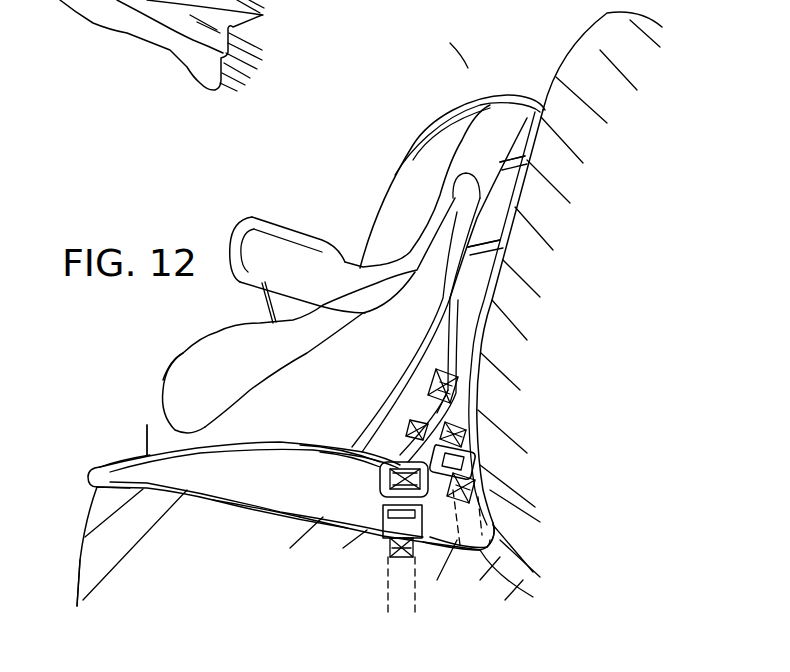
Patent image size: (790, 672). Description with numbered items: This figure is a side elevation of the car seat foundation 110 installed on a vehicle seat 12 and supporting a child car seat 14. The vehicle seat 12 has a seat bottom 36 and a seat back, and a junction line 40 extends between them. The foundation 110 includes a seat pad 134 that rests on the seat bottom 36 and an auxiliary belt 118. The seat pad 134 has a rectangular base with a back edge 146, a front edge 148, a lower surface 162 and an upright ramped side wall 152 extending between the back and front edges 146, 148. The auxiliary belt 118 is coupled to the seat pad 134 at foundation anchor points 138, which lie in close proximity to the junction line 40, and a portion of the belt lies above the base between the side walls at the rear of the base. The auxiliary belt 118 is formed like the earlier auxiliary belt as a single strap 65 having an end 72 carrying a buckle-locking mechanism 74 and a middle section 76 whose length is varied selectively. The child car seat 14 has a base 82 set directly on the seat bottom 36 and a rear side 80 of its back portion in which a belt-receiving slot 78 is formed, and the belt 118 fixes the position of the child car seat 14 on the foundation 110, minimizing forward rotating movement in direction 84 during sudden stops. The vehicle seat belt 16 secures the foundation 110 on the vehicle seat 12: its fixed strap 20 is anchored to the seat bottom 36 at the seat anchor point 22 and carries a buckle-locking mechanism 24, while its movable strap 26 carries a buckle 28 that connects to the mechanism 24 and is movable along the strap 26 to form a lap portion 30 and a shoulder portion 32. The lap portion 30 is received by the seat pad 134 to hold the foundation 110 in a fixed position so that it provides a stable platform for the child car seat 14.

The vehicle seat 12 is at (65, 0).
The child car seat 14 is at (389, 150).
The seat belt 16 is at (365, 493).
The fixed strap 20 is at (380, 587).
The seat anchor point 22 is at (432, 615).
The buckle-locking mechanism 24 is at (372, 538).
The movable strap 26 is at (418, 400).
The buckle 28 is at (361, 470).
The lap portion 30 is at (425, 404).
The shoulder portion 32 is at (463, 393).
The seat bottom 36 is at (110, 553).
The junction line 40 is at (517, 550).
The strap 65 is at (440, 370).
The end 72 is at (463, 423).
The buckle-locking mechanism 74 is at (468, 447).
The middle section 76 is at (515, 583).
The belt-receiving slot 78 is at (483, 307).
The rear side 80 is at (500, 227).
The base 82 is at (147, 425).
The direction 84 is at (431, 34).
The car seat foundation 110 is at (120, 445).
The auxiliary belt 118 is at (478, 431).
The seat pad 134 is at (71, 471).
The foundation anchor points 138 is at (467, 560).
The back edge 146 is at (526, 552).
The front edge 148 is at (95, 457).
The side wall 152 is at (230, 473).
The lower surface 162 is at (262, 512).